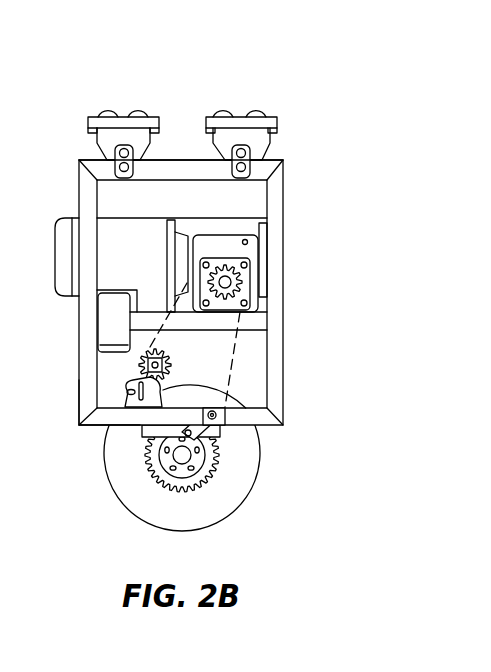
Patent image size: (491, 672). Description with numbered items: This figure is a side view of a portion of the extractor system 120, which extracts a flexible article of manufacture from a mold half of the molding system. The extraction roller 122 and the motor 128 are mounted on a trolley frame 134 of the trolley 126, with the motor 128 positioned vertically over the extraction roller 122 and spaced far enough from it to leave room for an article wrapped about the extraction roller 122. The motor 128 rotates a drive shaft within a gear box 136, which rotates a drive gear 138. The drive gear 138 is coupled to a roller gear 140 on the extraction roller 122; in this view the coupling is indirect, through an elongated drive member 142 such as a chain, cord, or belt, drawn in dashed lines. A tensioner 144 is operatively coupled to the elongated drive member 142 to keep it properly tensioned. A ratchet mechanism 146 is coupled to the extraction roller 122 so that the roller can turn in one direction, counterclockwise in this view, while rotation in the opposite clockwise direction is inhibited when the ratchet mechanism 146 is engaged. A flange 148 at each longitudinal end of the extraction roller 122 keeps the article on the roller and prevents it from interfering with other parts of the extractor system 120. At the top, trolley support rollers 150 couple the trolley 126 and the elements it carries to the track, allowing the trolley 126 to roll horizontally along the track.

The extractor system 120 is at (316, 126).
The extraction roller 122 is at (272, 468).
The trolley 126 is at (292, 203).
The motor 128 is at (113, 250).
The trolley frame 134 is at (85, 400).
The gear box 136 is at (247, 250).
The drive gear 138 is at (240, 297).
The roller gear 140 is at (150, 470).
The elongated drive member 142 is at (237, 373).
The tensioner 144 is at (122, 370).
The ratchet mechanism 146 is at (203, 486).
The flange 148 is at (227, 493).
The trolley support roller 150 is at (228, 130).